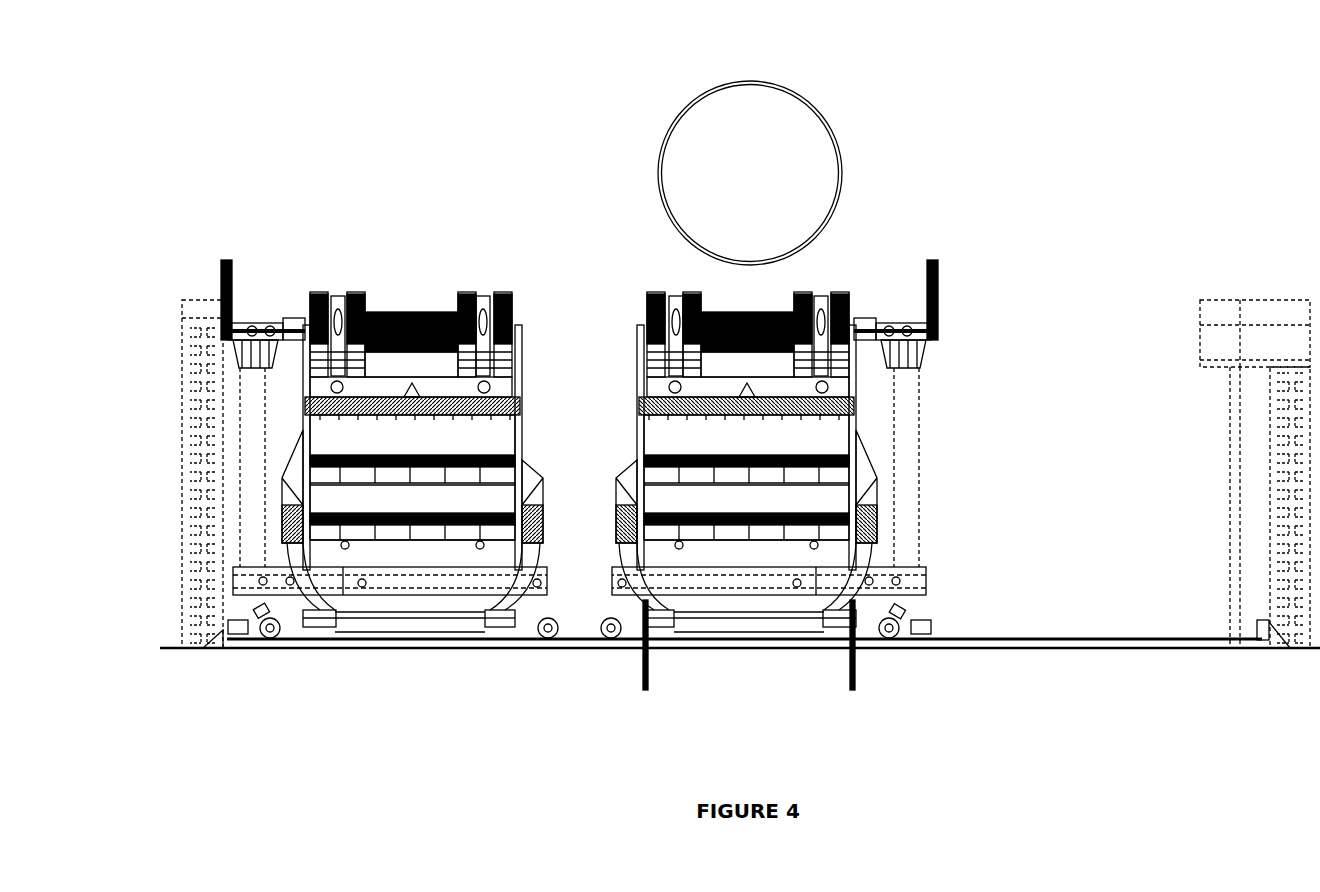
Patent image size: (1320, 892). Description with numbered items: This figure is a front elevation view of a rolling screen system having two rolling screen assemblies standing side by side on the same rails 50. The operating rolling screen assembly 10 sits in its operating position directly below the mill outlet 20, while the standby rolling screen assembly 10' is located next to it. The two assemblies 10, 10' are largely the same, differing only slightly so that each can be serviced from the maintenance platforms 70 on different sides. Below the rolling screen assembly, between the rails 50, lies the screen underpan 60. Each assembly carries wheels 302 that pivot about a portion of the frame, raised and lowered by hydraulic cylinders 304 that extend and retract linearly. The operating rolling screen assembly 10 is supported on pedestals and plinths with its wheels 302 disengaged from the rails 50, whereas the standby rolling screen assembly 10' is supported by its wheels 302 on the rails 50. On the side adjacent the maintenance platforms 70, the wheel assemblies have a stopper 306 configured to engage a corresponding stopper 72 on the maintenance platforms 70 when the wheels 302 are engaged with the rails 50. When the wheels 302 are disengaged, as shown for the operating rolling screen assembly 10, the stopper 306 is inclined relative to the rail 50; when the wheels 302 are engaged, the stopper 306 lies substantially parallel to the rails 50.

The operating rolling screen assembly 10 is at (847, 370).
The standby rolling screen assembly 10' is at (384, 347).
The mill outlet 20 is at (822, 120).
The rails 50 is at (1115, 648).
The screen underpan 60 is at (645, 694).
The maintenance platforms 70 is at (201, 213).
The stopper 72 is at (230, 620).
The wheels 302 is at (272, 640).
The hydraulic cylinders 304 is at (320, 625).
The stopper 306 is at (241, 637).